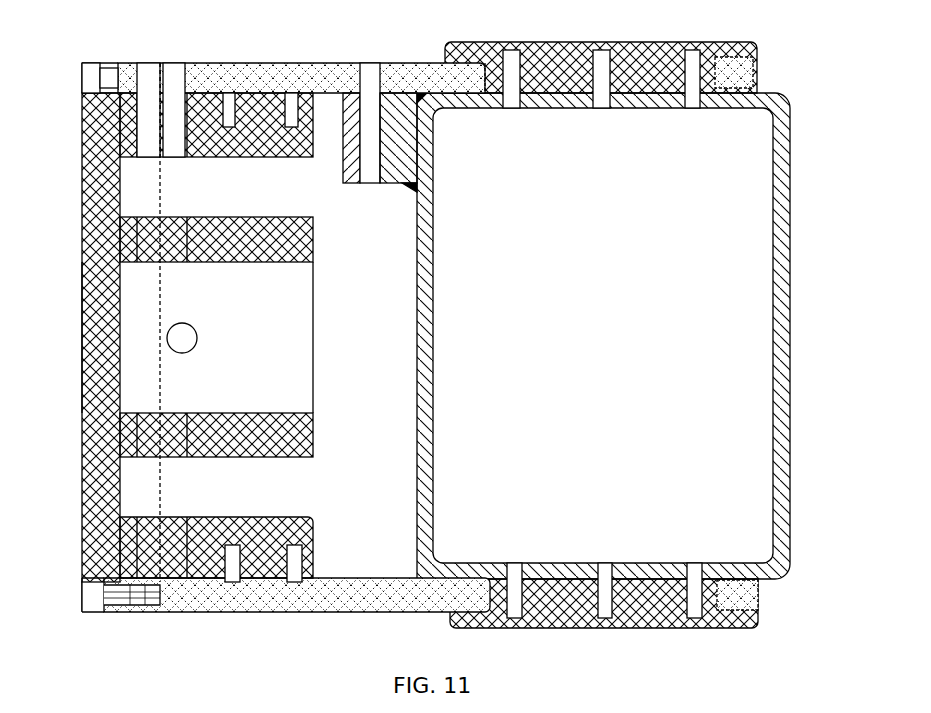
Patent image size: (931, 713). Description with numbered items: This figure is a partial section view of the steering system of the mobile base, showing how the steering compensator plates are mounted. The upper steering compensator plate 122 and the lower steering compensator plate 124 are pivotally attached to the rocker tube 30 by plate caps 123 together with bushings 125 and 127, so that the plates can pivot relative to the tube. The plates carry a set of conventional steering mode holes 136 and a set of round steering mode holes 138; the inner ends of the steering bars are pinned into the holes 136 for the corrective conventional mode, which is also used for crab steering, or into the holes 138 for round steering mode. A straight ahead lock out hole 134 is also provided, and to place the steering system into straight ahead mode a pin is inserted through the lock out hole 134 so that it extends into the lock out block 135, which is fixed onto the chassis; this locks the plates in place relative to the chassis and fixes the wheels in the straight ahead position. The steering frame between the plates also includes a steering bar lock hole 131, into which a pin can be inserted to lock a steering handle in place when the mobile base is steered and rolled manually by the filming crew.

The rocker tube 30 is at (785, 185).
The upper steering compensator plate 122 is at (103, 613).
The plate cap 123 is at (650, 50).
The lower steering compensator plate 124 is at (330, 597).
The bushing 125 is at (727, 72).
The bushing 127 is at (758, 88).
The steering bar lock hole 131 is at (180, 338).
The straight ahead lock out hole 134 is at (376, 61).
The lock out block 135 is at (400, 165).
The conventional steering mode hole 136 is at (148, 62).
The round steering mode hole 138 is at (178, 62).